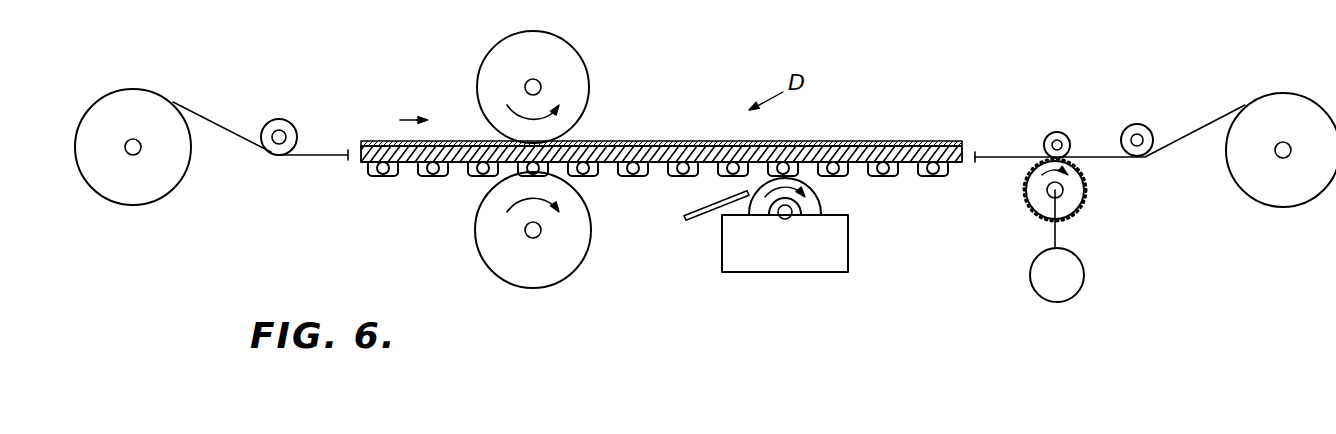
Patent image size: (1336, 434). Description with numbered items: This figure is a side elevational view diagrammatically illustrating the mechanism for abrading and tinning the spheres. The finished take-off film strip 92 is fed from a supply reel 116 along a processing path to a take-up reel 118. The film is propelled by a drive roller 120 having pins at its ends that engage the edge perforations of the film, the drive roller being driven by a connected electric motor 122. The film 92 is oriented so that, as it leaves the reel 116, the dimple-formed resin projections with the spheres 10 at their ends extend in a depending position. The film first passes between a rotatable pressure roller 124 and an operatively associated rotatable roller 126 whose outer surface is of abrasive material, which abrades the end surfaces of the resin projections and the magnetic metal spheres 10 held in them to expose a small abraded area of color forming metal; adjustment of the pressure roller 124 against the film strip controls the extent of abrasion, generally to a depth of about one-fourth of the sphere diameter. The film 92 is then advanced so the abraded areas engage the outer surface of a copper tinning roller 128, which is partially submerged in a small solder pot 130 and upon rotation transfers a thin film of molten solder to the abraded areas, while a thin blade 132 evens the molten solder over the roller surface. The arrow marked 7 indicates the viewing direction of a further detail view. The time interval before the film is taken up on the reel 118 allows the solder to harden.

The supply reel 116 is at (136, 92).
The take-off film strip 92 is at (213, 115).
The sphere 10 is at (378, 185).
The pressure roller 124 is at (499, 54).
The abrasive roller 126 is at (498, 262).
The thin blade 132 is at (703, 206).
The tinning roller 128 is at (814, 203).
The solder pot 130 is at (802, 258).
The section view arrow 7 is at (918, 201).
The drive roller 120 is at (1076, 198).
The electric motor 122 is at (1076, 278).
The take-up reel 118 is at (1287, 97).